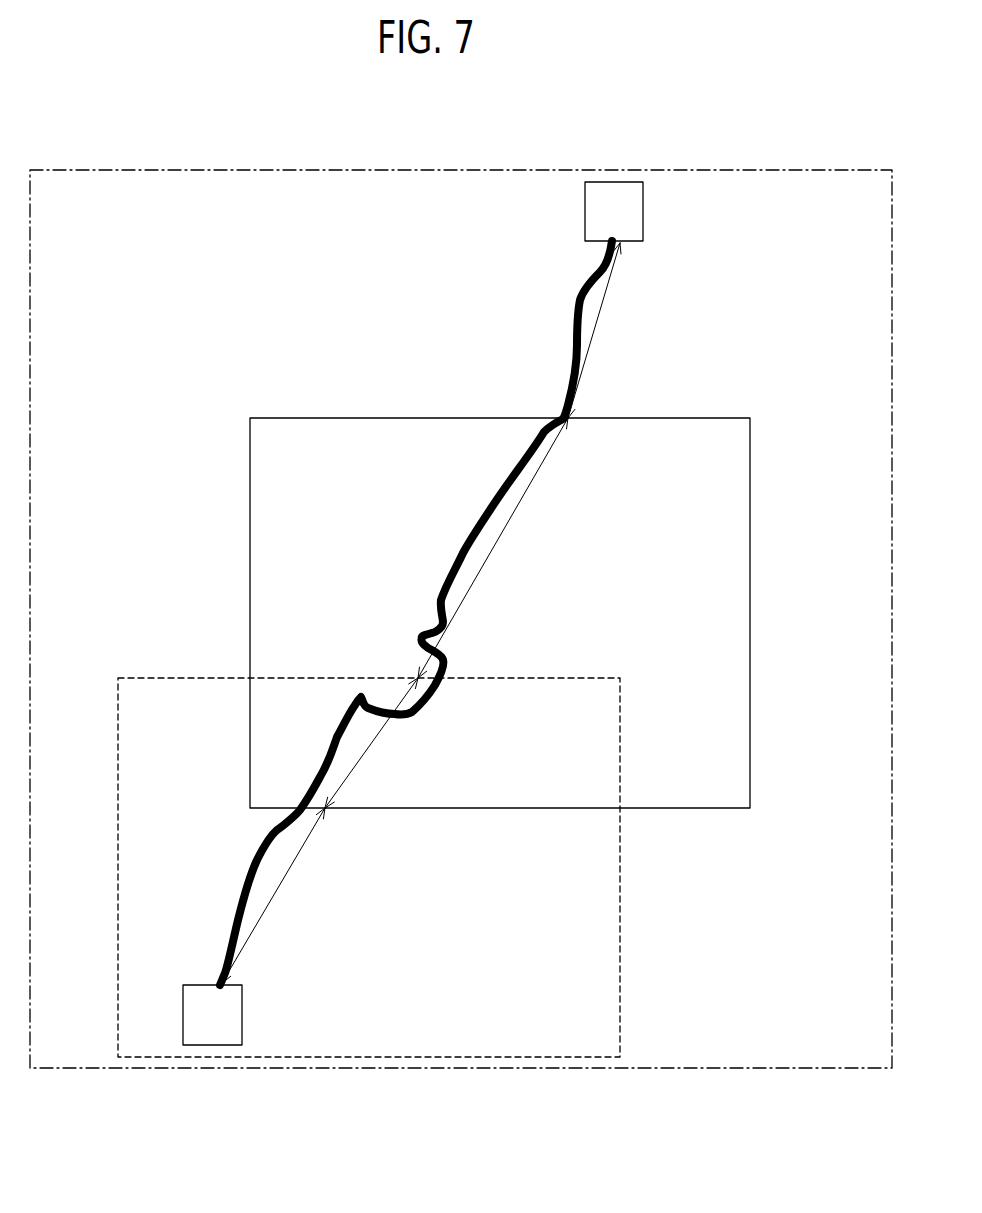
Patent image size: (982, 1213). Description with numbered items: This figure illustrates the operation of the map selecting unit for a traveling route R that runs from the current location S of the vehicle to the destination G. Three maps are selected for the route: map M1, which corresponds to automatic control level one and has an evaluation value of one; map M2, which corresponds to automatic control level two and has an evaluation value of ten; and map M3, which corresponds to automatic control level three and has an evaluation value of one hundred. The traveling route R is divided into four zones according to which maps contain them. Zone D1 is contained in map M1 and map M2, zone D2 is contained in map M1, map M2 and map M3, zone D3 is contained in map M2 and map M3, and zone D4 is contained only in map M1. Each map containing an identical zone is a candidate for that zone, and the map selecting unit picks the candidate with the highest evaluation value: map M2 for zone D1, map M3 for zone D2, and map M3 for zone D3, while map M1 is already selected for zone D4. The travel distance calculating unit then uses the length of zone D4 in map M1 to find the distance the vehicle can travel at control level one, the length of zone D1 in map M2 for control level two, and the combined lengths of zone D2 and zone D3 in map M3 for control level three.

The map M1 is at (172, 170).
The map M2 is at (172, 678).
The map M3 is at (348, 418).
The traveling route R is at (575, 345).
The destination G is at (614, 211).
The current location S is at (212, 1015).
The zone D1 is at (273, 895).
The zone D2 is at (371, 743).
The zone D3 is at (493, 548).
The zone D4 is at (607, 330).